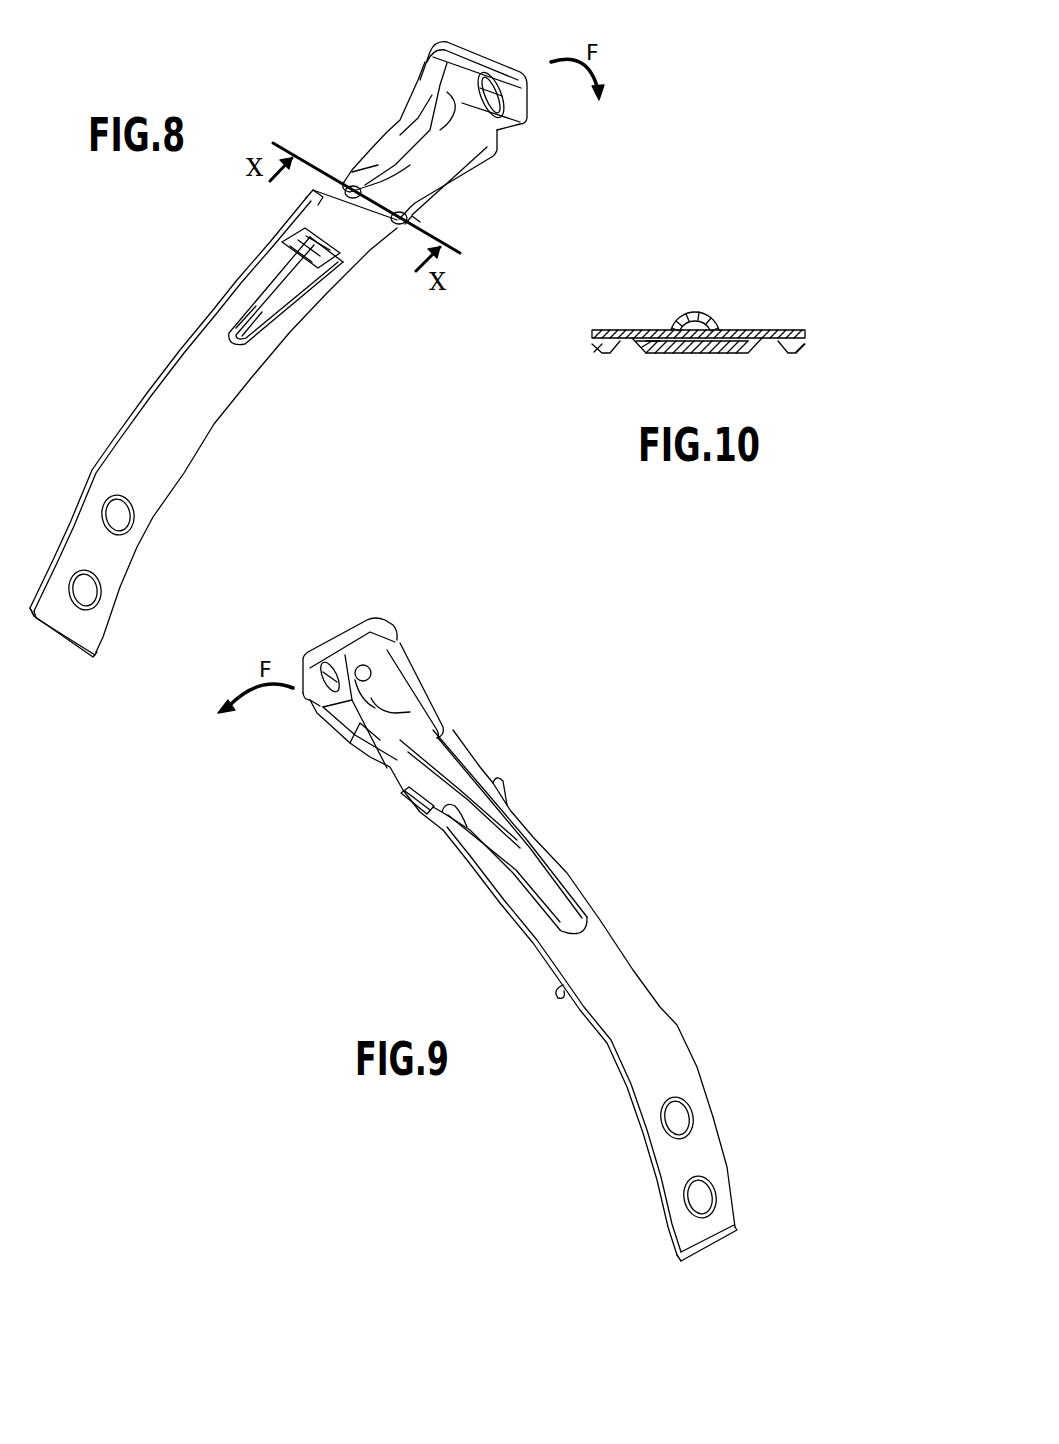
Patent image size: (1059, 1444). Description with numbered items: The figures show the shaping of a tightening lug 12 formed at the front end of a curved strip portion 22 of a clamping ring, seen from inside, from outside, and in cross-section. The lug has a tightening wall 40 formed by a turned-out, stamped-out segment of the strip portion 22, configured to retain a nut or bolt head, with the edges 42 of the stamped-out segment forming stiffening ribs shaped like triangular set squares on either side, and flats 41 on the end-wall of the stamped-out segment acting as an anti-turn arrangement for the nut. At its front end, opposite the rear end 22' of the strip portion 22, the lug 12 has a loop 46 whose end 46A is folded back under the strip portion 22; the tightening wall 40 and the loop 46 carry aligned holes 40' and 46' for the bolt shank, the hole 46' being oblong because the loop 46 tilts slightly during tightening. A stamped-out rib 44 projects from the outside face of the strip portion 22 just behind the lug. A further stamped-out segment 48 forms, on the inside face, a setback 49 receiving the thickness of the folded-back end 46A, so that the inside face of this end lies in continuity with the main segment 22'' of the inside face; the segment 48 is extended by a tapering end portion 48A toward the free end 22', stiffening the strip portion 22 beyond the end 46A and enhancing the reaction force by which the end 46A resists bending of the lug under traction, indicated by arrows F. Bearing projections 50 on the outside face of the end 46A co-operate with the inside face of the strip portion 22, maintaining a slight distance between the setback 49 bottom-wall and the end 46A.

In FIG. 8, the tightening lug 12 is at (470, 52).
In FIG. 9, the tightening lug 12 is at (373, 625).
In FIG. 8, the strip portion 22 is at (213, 423).
In FIG. 10, the strip portion 22 is at (698, 334).
In FIG. 9, the strip portion 22 is at (590, 995).
In FIG. 8, the rear end of the strip portion 22' is at (54, 653).
In FIG. 9, the rear end of the strip portion 22' is at (727, 1263).
In FIG. 9, the main segment of the inside face 22'' is at (601, 998).
In FIG. 9, the tightening wall 40 is at (423, 684).
In FIG. 9, the hole 40' is at (353, 653).
In FIG. 9, the flats 41 is at (375, 706).
In FIG. 8, the edges of the stamped-out segment 42 is at (418, 88).
In FIG. 9, the edges of the stamped-out segment 42 is at (405, 693).
In FIG. 10, the stamped-out rib 44 is at (699, 314).
In FIG. 9, the stamped-out rib 44 is at (445, 778).
In FIG. 8, the loop 46 is at (469, 161).
In FIG. 8, the hole 46' is at (531, 98).
In FIG. 9, the hole 46' is at (310, 654).
In FIG. 8, the folded-back end of the loop 46A is at (348, 230).
In FIG. 10, the folded-back end of the loop 46A is at (703, 352).
In FIG. 9, the folded-back end of the loop 46A is at (410, 806).
In FIG. 9, the stamped-out segment 48 is at (480, 772).
In FIG. 9, the end portion of the stamped-out segment 48A is at (547, 877).
In FIG. 8, the setback 49 is at (365, 170).
In FIG. 10, the setback 49 is at (670, 353).
In FIG. 8, the bearing projections 50 is at (352, 199).
In FIG. 10, the bearing projections 50 is at (618, 353).